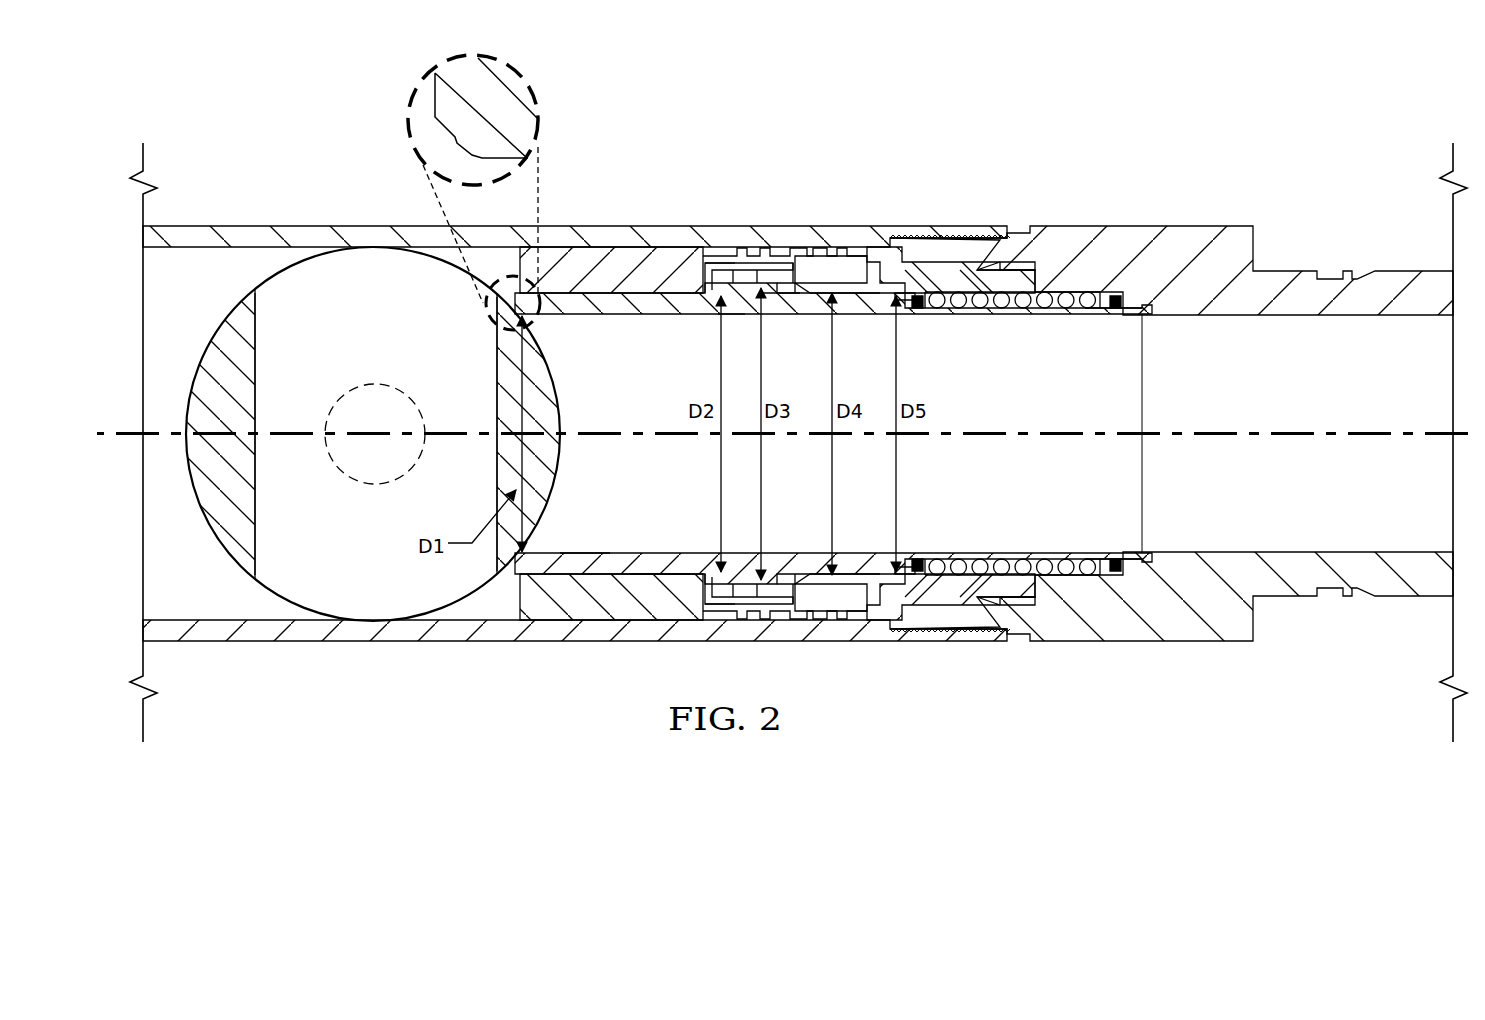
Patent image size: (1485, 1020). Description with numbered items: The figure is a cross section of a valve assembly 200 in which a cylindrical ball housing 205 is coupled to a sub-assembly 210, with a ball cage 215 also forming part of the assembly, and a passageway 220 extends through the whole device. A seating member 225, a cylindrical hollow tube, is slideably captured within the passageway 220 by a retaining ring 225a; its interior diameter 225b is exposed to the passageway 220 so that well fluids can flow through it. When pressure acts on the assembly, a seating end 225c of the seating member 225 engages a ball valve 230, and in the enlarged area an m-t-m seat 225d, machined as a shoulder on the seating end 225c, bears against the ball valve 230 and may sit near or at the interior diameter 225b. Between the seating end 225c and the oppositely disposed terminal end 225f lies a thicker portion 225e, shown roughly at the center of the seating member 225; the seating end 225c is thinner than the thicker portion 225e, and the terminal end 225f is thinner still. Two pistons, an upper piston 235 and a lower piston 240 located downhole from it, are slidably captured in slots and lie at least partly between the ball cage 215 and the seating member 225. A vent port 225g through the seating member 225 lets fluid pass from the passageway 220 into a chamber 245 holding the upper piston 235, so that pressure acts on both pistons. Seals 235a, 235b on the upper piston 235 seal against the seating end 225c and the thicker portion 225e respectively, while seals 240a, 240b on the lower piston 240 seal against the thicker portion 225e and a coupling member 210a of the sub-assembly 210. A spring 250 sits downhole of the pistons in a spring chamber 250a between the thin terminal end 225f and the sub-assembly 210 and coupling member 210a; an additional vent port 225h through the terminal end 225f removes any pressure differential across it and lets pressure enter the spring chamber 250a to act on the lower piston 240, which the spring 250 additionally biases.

The valve assembly 200 is at (1132, 67).
The cylindrical ball housing 205 is at (250, 236).
The sub-assembly 210 is at (1152, 230).
The coupling member 210a is at (1018, 263).
The ball cage 215 is at (622, 254).
The passageway 220 is at (1322, 391).
The seating member 225 is at (584, 328).
The retaining ring 225a is at (1108, 296).
The interior diameter 225b is at (662, 563).
The seating end 225c is at (584, 540).
The m-t-m seat 225d is at (433, 88).
The thicker portion 225e is at (778, 318).
The terminal end 225f is at (1078, 536).
The vent port 225g is at (732, 314).
The additional vent port 225h is at (1010, 304).
The ball valve 230 is at (232, 322).
The upper piston 235 is at (750, 258).
The seal 235a is at (702, 282).
The seal 235b is at (772, 256).
The lower piston 240 is at (852, 300).
The seal 240a is at (816, 256).
The seal 240b is at (905, 300).
The chamber 245 is at (712, 262).
The spring 250 is at (1038, 636).
The spring chamber 250a is at (1078, 312).